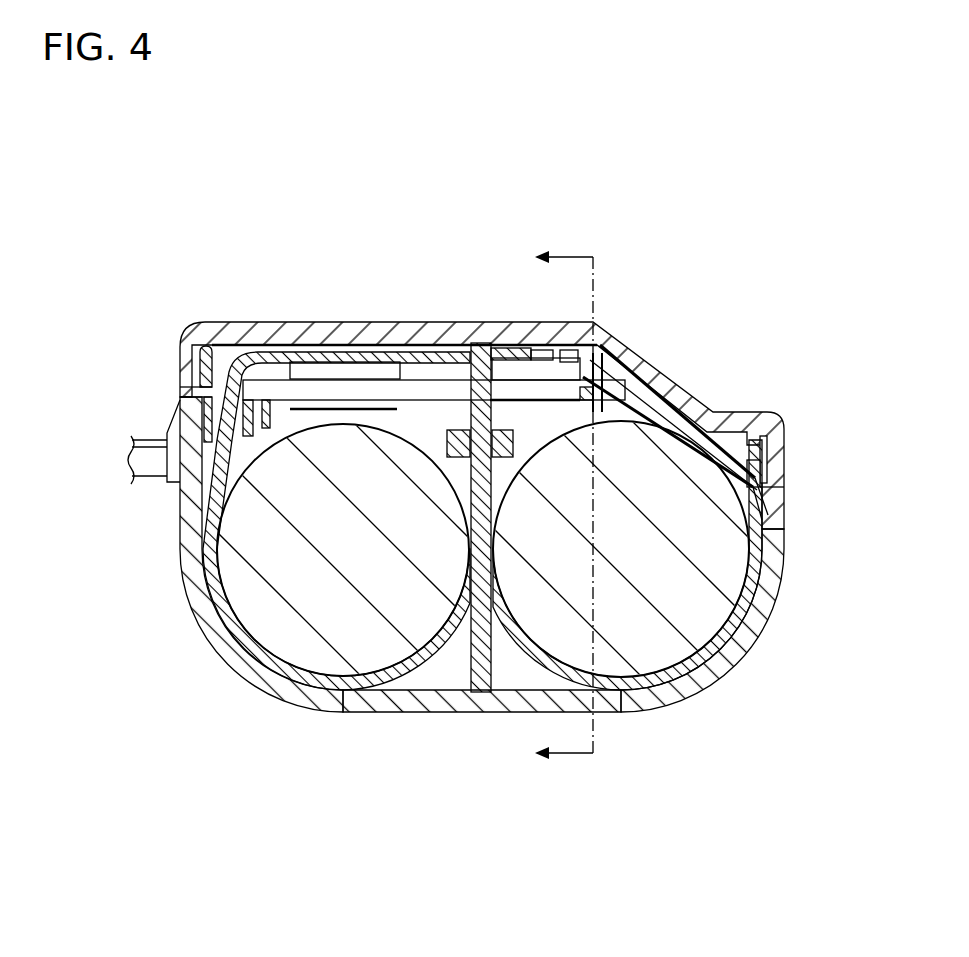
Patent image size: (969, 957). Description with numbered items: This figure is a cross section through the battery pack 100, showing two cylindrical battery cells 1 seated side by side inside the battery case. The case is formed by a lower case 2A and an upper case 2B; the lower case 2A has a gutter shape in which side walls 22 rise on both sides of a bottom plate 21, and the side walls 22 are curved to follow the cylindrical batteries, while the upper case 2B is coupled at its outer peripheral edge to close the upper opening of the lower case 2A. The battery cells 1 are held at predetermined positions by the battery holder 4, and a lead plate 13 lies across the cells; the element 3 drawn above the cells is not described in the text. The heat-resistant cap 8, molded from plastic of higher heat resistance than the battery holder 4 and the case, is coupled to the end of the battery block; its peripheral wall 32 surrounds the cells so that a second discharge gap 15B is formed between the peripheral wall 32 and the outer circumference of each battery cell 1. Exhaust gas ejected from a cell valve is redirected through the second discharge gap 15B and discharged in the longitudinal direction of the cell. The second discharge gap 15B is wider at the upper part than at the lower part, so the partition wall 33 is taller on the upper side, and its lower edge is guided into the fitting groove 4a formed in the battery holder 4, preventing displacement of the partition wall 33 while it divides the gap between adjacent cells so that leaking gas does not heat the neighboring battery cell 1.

The battery pack 100 is at (665, 225).
The battery cell 1 is at (337, 615).
The lower case 2A is at (486, 637).
The upper case 2B is at (522, 332).
The circuit board 3 is at (420, 398).
The battery holder 4 is at (630, 416).
The fitting groove 4a is at (499, 428).
The heat-resistant cap 8 is at (435, 302).
The peripheral wall 32 is at (392, 366).
The partition wall 33 is at (454, 420).
The lead plate 13 is at (262, 352).
The second discharge gap 15B is at (358, 381).
The bottom plate 21 is at (486, 712).
The side wall 22 is at (163, 556).